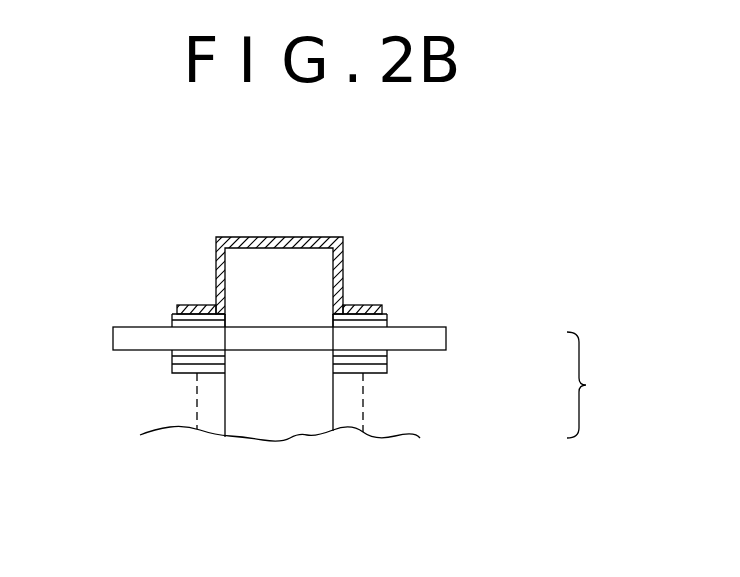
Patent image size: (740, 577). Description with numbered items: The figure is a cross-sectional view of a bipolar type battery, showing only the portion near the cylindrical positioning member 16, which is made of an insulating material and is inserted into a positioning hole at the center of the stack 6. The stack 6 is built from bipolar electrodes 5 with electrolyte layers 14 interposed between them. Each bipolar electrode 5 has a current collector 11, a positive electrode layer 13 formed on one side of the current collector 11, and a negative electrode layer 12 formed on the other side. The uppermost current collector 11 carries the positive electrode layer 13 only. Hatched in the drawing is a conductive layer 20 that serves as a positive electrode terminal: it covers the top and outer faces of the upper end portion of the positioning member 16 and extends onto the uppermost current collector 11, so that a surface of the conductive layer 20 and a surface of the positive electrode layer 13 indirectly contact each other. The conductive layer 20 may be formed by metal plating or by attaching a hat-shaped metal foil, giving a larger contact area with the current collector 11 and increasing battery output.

The bipolar electrode 5 is at (590, 385).
The stack 6 is at (400, 408).
The current collector 11 is at (370, 305).
The negative electrode layer 12 is at (388, 354).
The positive electrode layer 13 is at (388, 318).
The electrolyte layer 14 is at (446, 338).
The positioning member 16 is at (277, 420).
The conductive layer 20 is at (321, 237).